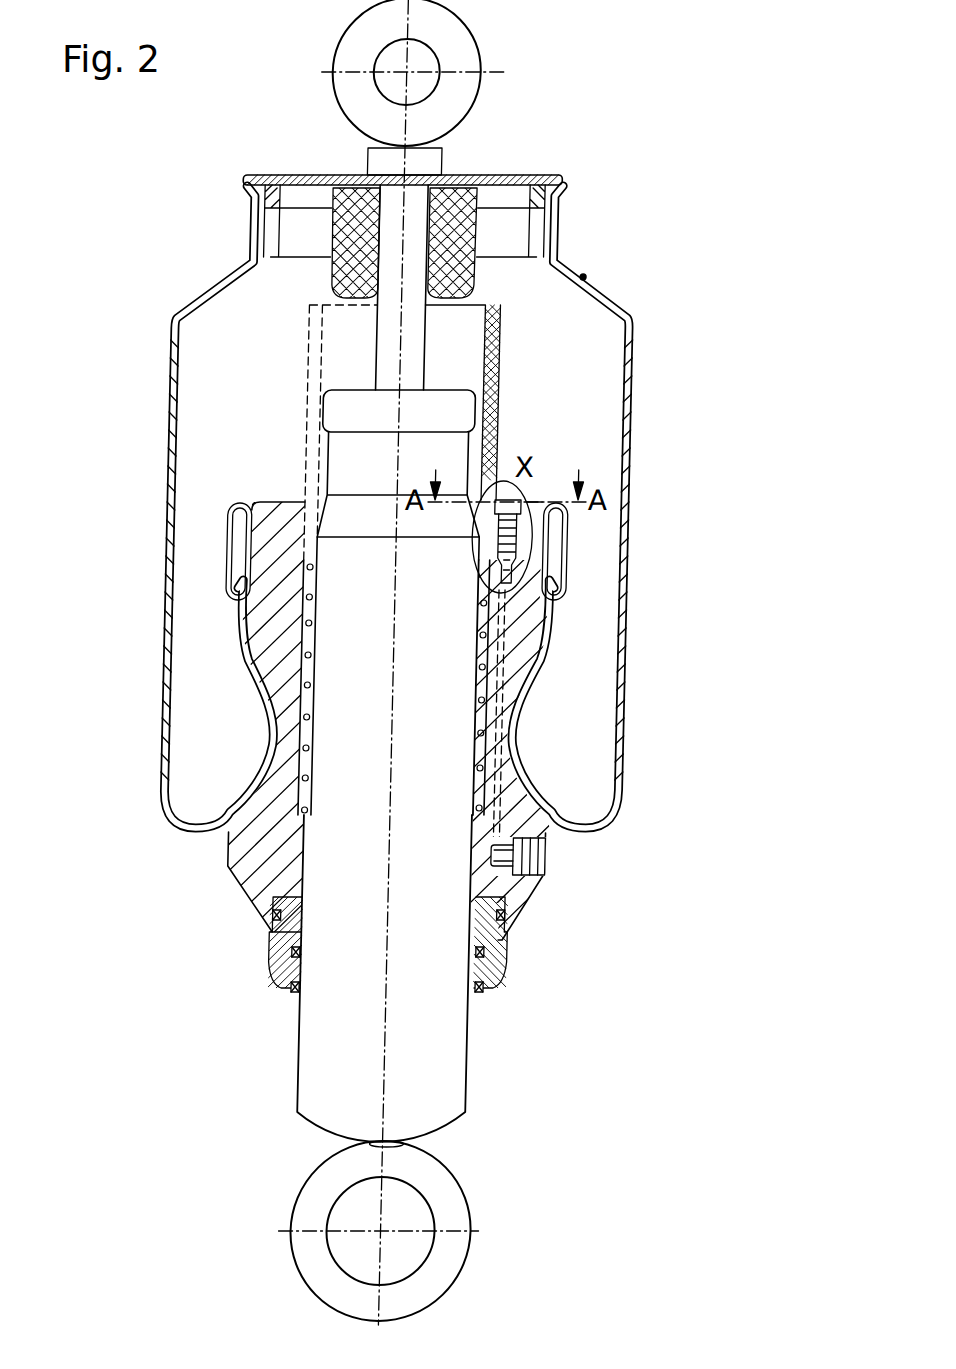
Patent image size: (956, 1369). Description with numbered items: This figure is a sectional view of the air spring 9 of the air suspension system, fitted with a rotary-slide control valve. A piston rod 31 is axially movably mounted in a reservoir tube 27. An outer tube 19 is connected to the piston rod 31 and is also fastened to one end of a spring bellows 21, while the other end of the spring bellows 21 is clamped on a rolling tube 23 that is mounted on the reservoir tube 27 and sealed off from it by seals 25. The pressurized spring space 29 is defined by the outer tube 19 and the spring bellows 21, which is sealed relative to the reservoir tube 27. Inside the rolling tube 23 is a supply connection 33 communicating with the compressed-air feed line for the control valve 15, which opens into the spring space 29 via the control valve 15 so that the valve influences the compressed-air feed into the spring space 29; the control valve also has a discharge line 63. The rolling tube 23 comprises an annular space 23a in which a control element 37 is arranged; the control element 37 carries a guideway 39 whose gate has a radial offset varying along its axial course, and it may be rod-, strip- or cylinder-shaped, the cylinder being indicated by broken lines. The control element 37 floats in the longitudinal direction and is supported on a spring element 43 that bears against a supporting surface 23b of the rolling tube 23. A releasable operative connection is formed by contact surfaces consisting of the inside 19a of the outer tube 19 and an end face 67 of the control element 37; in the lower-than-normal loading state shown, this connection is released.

The air spring 9 is at (198, 911).
The control valve 15 is at (515, 513).
The outer tube 19 is at (518, 183).
The inside of the outer tube 19a is at (500, 187).
The spring bellows 21 is at (640, 332).
The rolling tube 23 is at (536, 905).
The annular space 23a is at (247, 828).
The supporting surface 23b is at (311, 850).
The seals 25 is at (500, 957).
The reservoir tube 27 is at (461, 1117).
The spring space 29 is at (612, 670).
The piston rod 31 is at (394, 317).
The supply connection 33 is at (565, 853).
The control element 37 is at (503, 330).
The guideway 39 is at (505, 485).
The spring element 43 is at (668, 580).
The discharge line 63 is at (565, 853).
The end face 67 is at (588, 277).